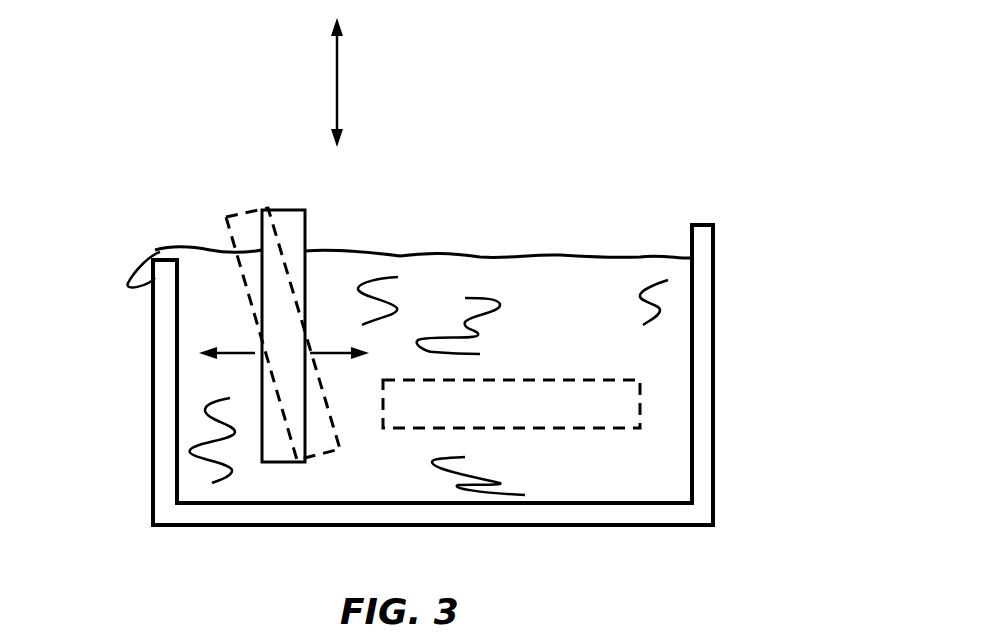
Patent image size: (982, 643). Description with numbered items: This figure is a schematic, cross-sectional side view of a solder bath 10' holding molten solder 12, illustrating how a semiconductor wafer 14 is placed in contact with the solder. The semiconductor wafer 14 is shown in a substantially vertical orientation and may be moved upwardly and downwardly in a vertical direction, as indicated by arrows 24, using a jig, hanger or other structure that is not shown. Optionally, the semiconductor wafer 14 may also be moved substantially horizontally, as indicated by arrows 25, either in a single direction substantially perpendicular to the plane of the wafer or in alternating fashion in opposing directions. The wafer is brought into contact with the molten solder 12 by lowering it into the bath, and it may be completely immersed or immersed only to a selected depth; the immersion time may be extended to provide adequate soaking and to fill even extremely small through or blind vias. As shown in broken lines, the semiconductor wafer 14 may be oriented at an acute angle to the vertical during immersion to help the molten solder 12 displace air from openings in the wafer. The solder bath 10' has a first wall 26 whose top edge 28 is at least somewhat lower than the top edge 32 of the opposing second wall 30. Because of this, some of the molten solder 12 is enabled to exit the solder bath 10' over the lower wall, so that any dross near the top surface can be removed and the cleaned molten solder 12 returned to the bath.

The solder bath 10' is at (502, 375).
The molten solder 12 is at (611, 354).
The semiconductor wafer 14 is at (262, 242).
The arrows 24 is at (337, 76).
The arrows 25 is at (332, 353).
The first wall 26 is at (153, 368).
The top edge 28 is at (158, 250).
The second wall 30 is at (715, 394).
The top edge 32 is at (709, 220).